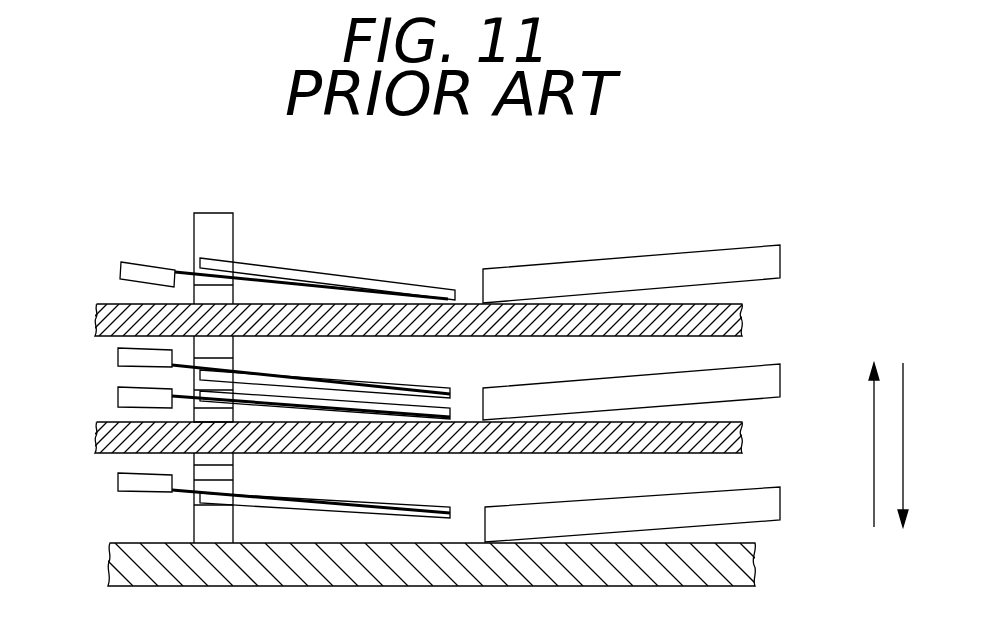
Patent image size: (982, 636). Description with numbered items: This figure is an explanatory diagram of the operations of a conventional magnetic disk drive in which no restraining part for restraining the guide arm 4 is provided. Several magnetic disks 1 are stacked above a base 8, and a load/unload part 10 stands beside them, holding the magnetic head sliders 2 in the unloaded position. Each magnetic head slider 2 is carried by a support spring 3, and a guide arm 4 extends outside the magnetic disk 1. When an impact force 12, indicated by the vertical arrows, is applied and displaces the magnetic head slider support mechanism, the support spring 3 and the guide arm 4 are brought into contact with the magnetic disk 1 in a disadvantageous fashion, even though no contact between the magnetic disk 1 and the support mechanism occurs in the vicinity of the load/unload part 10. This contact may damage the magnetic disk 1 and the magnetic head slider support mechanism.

The magnetic disk 1 is at (97, 312).
The magnetic head slider 2 is at (121, 271).
The support spring 3 is at (300, 273).
The guide arm 4 is at (768, 258).
The base 8 is at (108, 556).
The load/unload part 10 is at (212, 230).
The impact force 12 is at (884, 463).